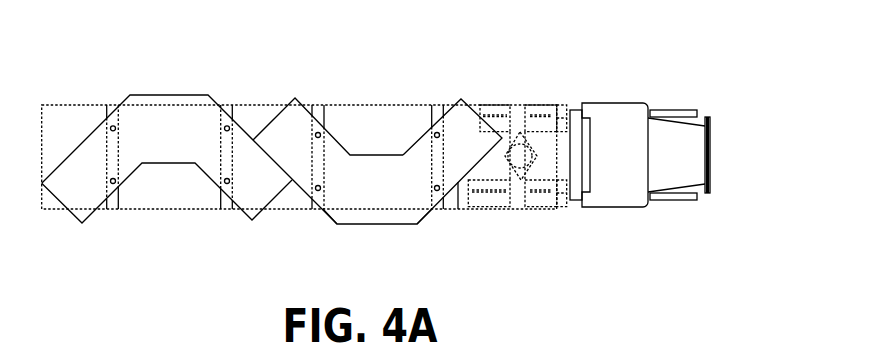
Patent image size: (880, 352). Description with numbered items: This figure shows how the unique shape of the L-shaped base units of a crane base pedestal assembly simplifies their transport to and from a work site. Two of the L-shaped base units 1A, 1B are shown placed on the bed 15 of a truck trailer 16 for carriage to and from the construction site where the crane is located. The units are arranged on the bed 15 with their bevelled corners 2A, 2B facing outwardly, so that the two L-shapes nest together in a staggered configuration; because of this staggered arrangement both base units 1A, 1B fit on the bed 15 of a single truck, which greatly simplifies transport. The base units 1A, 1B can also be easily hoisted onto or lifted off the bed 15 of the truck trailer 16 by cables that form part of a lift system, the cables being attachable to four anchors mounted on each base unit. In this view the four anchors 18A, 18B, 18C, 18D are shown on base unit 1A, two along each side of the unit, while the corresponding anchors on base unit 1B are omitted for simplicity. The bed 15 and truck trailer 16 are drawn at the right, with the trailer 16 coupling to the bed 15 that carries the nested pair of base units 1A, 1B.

The L-shaped base unit 1A is at (213, 103).
The L-shaped base unit 1B is at (432, 127).
The bevelled corner 2A is at (168, 95).
The bevelled corner 2B is at (378, 225).
The bed 15 is at (492, 103).
The truck trailer 16 is at (610, 103).
The anchor 18A is at (112, 126).
The anchor 18B is at (115, 183).
The anchor 18C is at (228, 126).
The anchor 18D is at (228, 184).